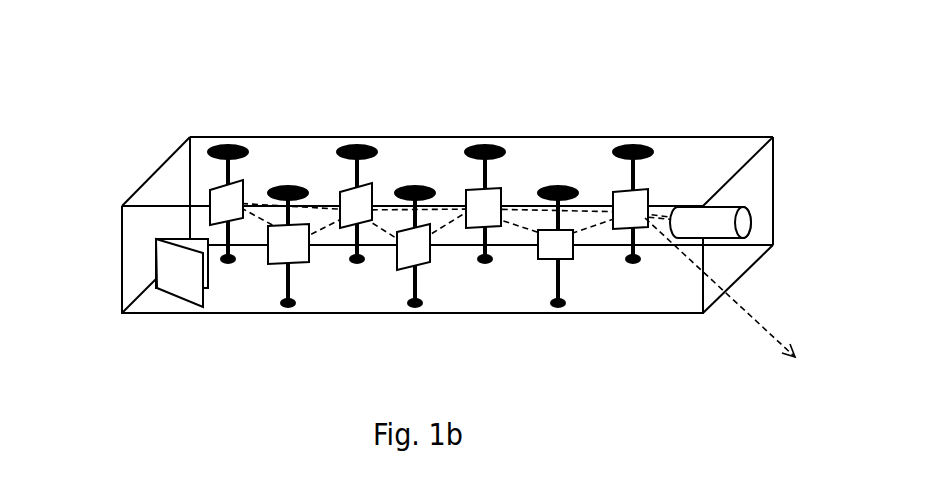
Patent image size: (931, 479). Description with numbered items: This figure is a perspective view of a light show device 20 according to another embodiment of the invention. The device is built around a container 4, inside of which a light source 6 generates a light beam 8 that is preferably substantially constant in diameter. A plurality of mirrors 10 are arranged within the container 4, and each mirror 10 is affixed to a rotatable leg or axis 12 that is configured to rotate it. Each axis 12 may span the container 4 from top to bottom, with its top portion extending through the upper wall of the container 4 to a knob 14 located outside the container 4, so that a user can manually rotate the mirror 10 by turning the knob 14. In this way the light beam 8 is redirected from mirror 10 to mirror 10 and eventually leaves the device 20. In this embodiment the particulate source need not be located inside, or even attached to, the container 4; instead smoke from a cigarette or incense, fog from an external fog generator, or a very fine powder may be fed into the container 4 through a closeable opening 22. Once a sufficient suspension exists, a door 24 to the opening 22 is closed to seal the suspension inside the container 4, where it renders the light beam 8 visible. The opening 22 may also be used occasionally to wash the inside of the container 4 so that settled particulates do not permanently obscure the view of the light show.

The light show device 20 is at (150, 74).
The container 4 is at (737, 137).
The light source 6 is at (745, 218).
The light beam 8 is at (770, 330).
The mirror 10 is at (628, 198).
The rotatable leg or axis 12 is at (485, 187).
The knob 14 is at (505, 148).
The closeable opening 22 is at (210, 270).
The door 24 is at (182, 299).